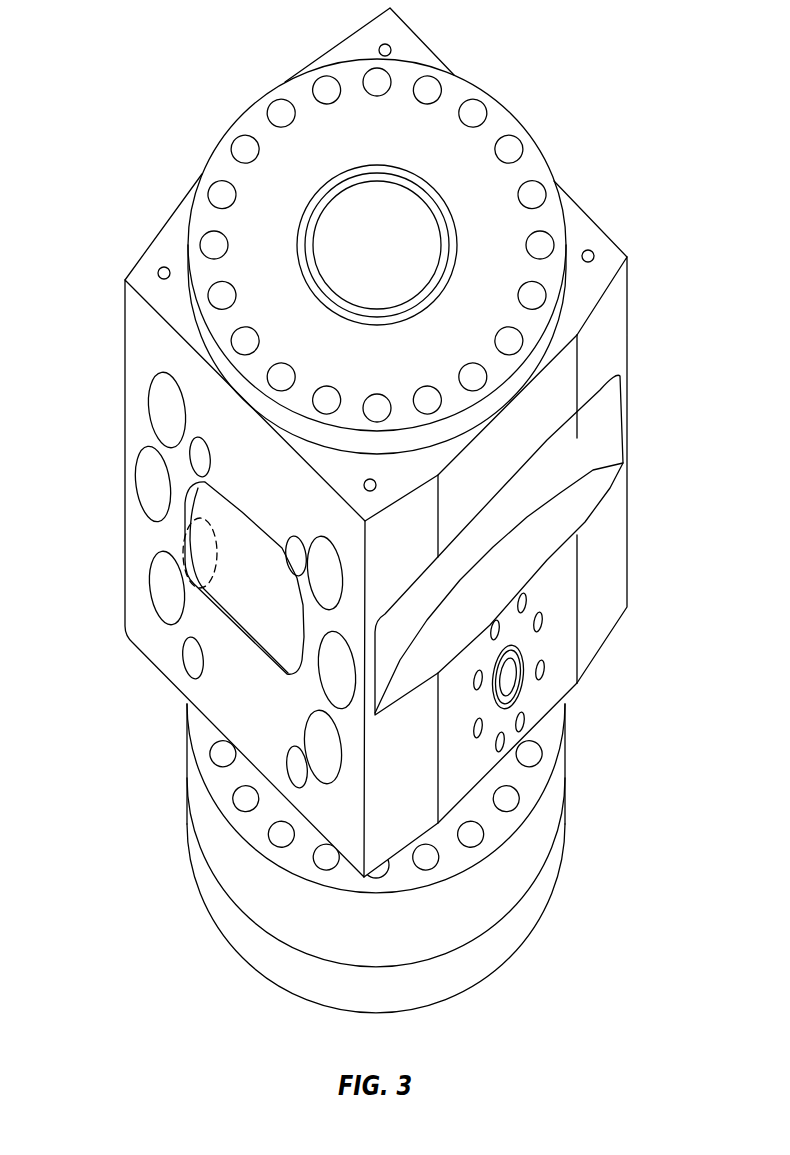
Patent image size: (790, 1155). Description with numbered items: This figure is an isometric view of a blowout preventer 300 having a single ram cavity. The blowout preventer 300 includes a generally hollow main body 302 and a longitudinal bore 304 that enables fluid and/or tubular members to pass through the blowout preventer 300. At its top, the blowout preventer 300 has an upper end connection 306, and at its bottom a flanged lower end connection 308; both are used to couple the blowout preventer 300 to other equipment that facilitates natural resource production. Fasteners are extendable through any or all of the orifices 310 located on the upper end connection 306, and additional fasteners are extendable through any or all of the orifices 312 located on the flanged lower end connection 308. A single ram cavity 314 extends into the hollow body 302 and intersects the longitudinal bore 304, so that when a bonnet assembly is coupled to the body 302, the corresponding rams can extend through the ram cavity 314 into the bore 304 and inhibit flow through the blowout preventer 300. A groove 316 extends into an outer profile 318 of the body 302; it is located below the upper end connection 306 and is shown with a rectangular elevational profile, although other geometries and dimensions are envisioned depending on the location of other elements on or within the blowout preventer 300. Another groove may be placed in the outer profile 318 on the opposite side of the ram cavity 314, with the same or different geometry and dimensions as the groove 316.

The blowout preventer 300 is at (140, 125).
The main body 302 is at (560, 673).
The bore 304 is at (412, 218).
The upper end connection 306 is at (307, 120).
The flanged lower end connection 308 is at (502, 888).
The orifices 310 is at (507, 148).
The orifices 312 is at (245, 800).
The ram cavity 314 is at (233, 552).
The groove 316 is at (605, 427).
The outer profile 318 is at (608, 575).